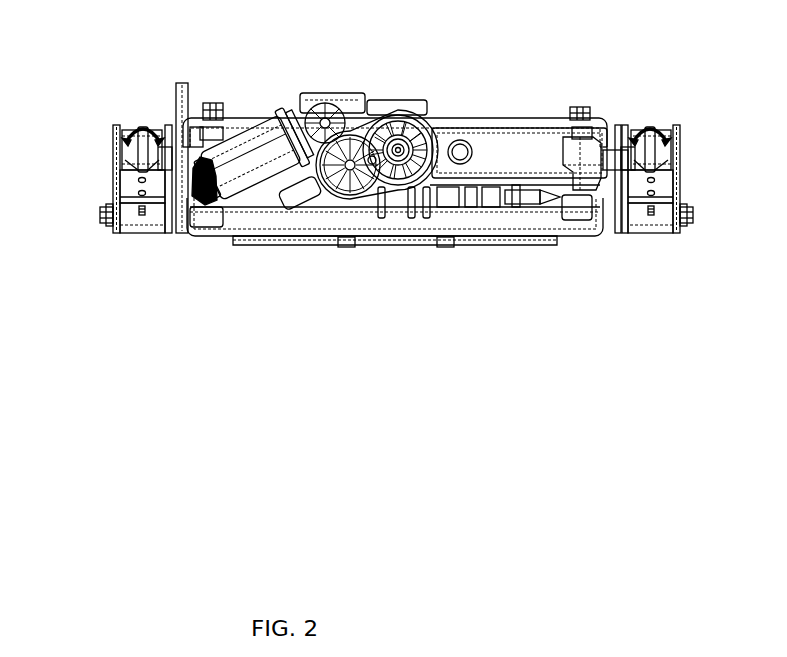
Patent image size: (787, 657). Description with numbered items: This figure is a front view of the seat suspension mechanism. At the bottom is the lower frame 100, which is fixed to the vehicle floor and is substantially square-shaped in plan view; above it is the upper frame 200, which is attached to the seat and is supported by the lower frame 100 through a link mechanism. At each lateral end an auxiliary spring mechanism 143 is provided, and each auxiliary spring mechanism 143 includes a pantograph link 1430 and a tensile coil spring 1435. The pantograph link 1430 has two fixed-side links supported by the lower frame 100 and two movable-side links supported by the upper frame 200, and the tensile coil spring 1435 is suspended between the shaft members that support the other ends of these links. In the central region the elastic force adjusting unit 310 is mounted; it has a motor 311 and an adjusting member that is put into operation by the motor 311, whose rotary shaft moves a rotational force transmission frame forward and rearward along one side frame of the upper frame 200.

The lower frame 100 is at (497, 238).
The upper frame 200 is at (526, 116).
The elastic force adjusting unit 310 is at (244, 142).
The motor 311 is at (396, 106).
The auxiliary spring mechanism 143 is at (143, 235).
The pantograph link 1430 is at (108, 182).
The tensile coil spring 1435 is at (141, 122).